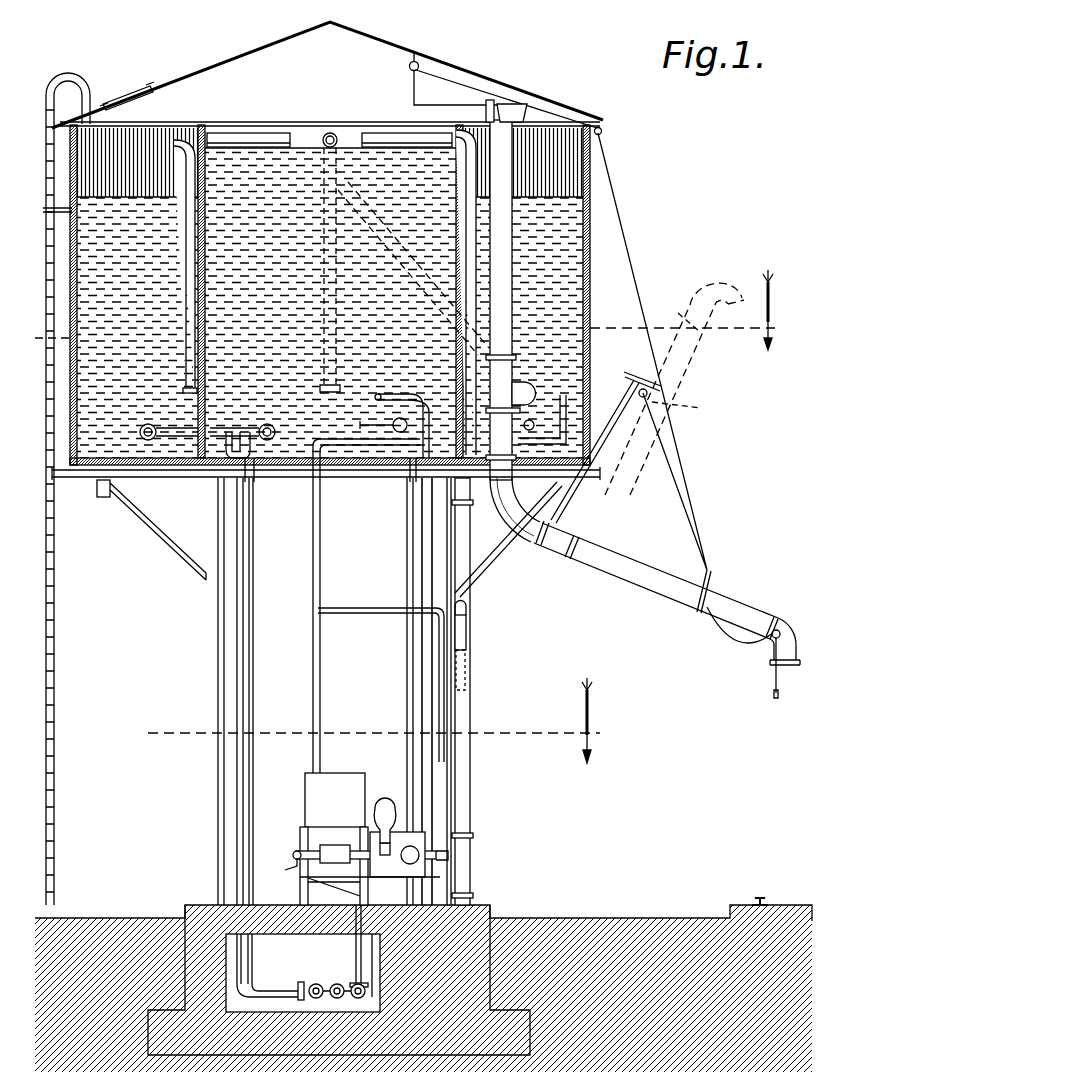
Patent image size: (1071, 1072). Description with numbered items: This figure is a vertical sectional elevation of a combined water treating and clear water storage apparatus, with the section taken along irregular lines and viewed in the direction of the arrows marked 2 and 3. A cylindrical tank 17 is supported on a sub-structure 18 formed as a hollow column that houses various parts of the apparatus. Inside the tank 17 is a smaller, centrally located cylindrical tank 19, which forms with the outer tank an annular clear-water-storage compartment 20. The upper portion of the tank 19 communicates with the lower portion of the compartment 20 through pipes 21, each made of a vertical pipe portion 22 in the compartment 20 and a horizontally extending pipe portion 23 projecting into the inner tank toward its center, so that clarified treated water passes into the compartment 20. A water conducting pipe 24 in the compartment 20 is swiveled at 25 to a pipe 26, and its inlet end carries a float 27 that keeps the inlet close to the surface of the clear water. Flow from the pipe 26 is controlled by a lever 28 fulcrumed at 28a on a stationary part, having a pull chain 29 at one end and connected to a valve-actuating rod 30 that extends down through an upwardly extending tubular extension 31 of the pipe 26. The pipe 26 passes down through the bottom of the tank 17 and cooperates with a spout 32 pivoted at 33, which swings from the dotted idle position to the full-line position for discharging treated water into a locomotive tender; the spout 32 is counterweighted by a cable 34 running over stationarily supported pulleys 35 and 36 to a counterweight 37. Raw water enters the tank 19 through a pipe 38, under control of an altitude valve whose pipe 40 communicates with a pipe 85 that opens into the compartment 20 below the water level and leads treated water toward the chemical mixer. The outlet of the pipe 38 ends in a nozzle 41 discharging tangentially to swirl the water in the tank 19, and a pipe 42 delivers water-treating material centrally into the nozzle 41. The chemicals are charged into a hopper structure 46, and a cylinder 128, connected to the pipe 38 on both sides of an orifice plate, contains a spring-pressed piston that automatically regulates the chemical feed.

The section line 2 is at (385, 720).
The section line 3 is at (693, 310).
The cylindrical tank 17 is at (78, 320).
The sub-structure 18 is at (220, 795).
The cylindrical tank 19 is at (196, 150).
The annular clear-water-storage compartment 20 is at (96, 470).
The pipes 21 is at (189, 139).
The vertical pipe portions 22 is at (186, 265).
The horizontally extending pipe portions 23 is at (268, 132).
The water conducting pipe 24 is at (362, 242).
The swivel 25 is at (522, 385).
The pipe 26 is at (500, 492).
The float 27 is at (332, 133).
The lever 28 is at (437, 105).
The fulcrum 28a is at (520, 108).
The pull chain 29 is at (409, 75).
The valve-actuating rod 30 is at (490, 100).
The tubular extension 31 is at (512, 238).
The spout 32 is at (640, 480).
The pivot 33 is at (563, 548).
The cable 34 is at (535, 555).
The arm 35 is at (598, 356).
The pulley 36 is at (647, 397).
The counterweight 37 is at (468, 687).
The pipe 38 is at (430, 545).
The pipe 40 is at (374, 608).
The nozzle 41 is at (386, 392).
The pipe 42 is at (430, 394).
The hopper structure 46 is at (340, 780).
The pipe 85 is at (322, 556).
The cylinder 128 is at (296, 856).